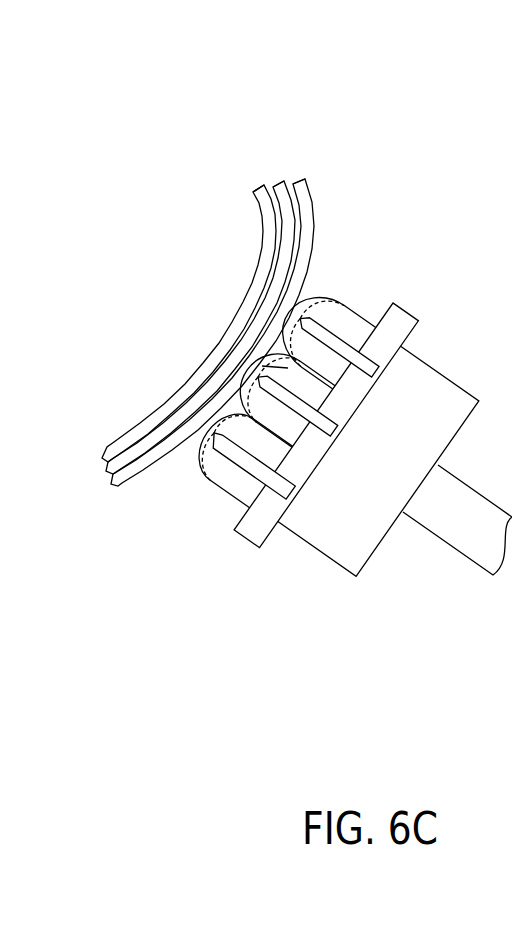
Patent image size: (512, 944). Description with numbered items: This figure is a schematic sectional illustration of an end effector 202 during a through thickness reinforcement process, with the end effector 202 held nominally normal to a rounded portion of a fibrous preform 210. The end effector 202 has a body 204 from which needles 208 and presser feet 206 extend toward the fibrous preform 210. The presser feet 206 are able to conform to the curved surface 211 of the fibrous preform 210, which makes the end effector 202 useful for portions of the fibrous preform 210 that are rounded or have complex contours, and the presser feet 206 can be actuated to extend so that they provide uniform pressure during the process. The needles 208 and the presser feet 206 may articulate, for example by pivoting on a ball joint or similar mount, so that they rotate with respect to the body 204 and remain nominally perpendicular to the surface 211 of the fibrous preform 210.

The end effector 202 is at (266, 600).
The body 204 is at (443, 376).
The presser feet 206 is at (380, 238).
The needles 208 is at (169, 477).
The fibrous preform 210 is at (303, 160).
The surface 211 is at (276, 362).